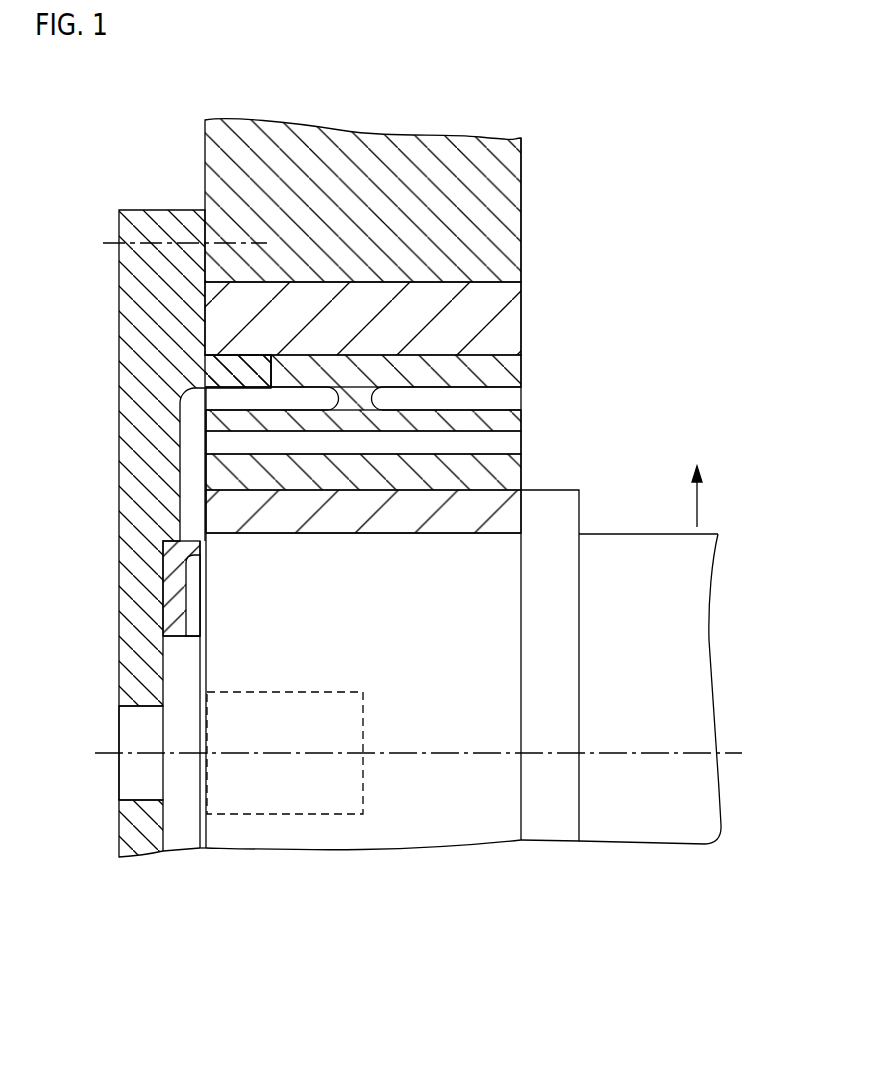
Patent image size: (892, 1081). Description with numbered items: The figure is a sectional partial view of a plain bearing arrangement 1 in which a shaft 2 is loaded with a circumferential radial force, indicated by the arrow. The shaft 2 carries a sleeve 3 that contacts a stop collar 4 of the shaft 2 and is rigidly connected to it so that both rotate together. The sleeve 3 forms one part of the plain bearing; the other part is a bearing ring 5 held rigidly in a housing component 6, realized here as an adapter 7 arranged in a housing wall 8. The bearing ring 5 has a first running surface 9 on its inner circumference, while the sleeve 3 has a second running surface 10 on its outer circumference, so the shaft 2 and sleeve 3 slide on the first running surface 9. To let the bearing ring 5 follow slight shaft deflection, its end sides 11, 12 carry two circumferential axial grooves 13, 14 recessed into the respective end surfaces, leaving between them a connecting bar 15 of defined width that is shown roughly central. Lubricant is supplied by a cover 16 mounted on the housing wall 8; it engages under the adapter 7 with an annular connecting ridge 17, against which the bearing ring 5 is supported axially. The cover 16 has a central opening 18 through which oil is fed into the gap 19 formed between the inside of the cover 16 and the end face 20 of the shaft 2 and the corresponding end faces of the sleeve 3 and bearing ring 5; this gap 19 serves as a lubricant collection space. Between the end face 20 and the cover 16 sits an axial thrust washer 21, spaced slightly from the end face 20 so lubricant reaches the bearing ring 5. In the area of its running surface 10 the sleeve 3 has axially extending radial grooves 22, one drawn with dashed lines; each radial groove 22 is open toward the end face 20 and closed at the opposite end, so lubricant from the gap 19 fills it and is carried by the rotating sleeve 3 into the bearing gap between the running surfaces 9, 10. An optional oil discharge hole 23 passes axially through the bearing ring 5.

The plain bearing arrangement 1 is at (394, 488).
The shaft 2 is at (463, 524).
The sleeve 3 is at (507, 520).
The stop collar 4 is at (567, 595).
The bearing ring 5 is at (333, 364).
The housing component 6 is at (337, 417).
The adapter 7 is at (512, 327).
The housing wall 8 is at (415, 143).
The first running surface 9 is at (258, 483).
The second running surface 10 is at (348, 491).
The end side 11 is at (521, 470).
The end side 12 is at (206, 481).
The axial groove 13 is at (505, 398).
The axial groove 14 is at (227, 400).
The connecting bar 15 is at (353, 400).
The cover 16 is at (159, 533).
The annular connecting ridge 17 is at (245, 372).
The central opening 18 is at (138, 722).
The gap 19 is at (183, 678).
The end face 20 is at (205, 822).
The axial thrust washer 21 is at (173, 583).
The radial groove 22 is at (288, 795).
The oil discharge hole 23 is at (496, 446).